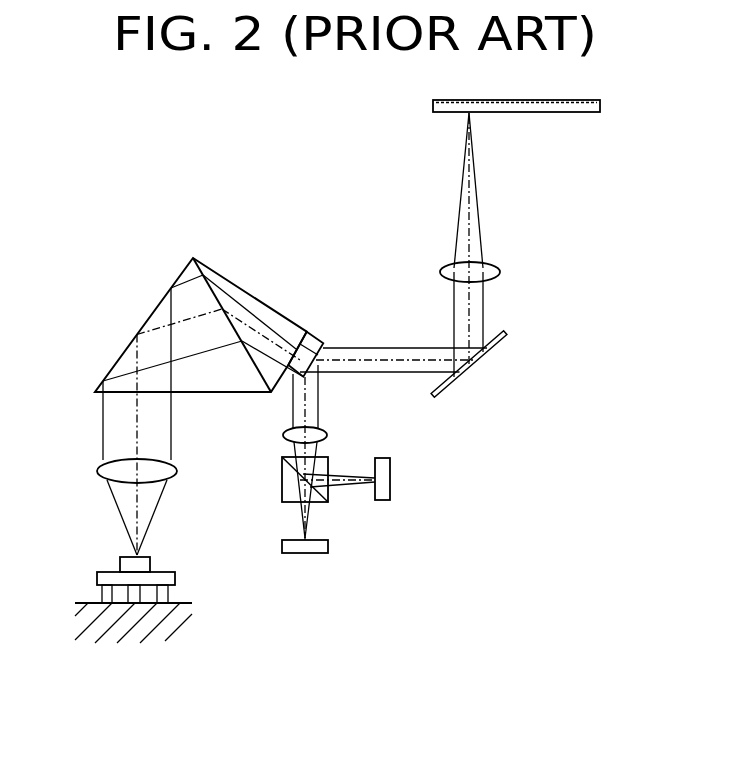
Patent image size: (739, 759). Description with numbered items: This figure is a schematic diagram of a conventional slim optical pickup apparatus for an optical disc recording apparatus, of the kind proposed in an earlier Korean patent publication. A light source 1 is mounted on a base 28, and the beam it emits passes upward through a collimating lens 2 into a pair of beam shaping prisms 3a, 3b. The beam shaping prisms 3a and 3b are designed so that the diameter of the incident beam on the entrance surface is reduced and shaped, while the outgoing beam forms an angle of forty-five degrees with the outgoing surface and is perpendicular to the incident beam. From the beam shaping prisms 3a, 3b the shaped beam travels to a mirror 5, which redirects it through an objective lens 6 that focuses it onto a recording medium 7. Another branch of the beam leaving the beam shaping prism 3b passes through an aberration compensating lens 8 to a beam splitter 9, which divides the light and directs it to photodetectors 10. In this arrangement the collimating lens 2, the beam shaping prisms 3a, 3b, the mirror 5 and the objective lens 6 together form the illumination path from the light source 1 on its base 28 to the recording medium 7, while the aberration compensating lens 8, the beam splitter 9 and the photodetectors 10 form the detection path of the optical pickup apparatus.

The light source 1 is at (175, 579).
The collimating lens 2 is at (177, 472).
The beam shaping prism 3a is at (182, 278).
The beam shaping prism 3b is at (320, 327).
The mirror 5 is at (470, 372).
The objective lens 6 is at (500, 272).
The recording medium 7 is at (600, 107).
The aberration compensating lens 8 is at (327, 435).
The beam splitter 9 is at (282, 487).
The photodetectors 10 is at (390, 480).
The base 28 is at (90, 603).